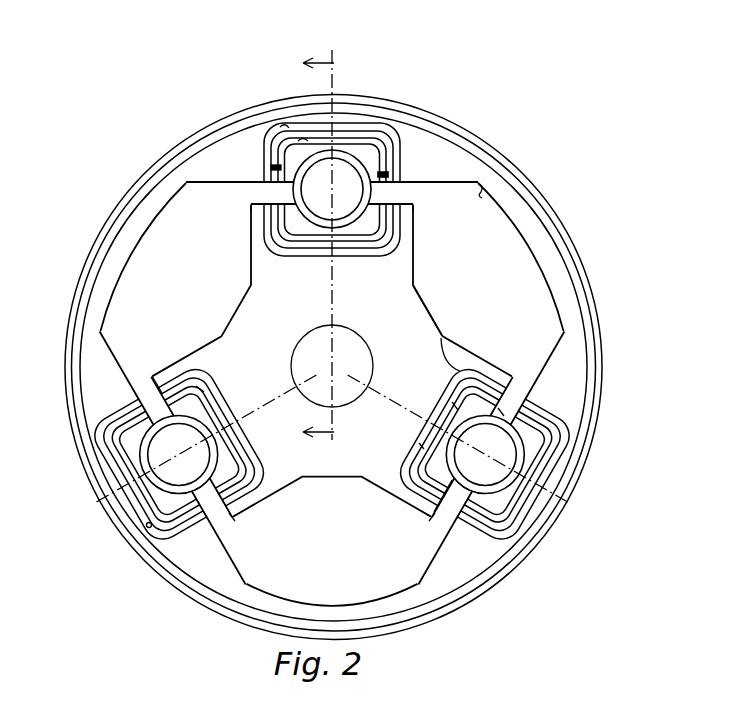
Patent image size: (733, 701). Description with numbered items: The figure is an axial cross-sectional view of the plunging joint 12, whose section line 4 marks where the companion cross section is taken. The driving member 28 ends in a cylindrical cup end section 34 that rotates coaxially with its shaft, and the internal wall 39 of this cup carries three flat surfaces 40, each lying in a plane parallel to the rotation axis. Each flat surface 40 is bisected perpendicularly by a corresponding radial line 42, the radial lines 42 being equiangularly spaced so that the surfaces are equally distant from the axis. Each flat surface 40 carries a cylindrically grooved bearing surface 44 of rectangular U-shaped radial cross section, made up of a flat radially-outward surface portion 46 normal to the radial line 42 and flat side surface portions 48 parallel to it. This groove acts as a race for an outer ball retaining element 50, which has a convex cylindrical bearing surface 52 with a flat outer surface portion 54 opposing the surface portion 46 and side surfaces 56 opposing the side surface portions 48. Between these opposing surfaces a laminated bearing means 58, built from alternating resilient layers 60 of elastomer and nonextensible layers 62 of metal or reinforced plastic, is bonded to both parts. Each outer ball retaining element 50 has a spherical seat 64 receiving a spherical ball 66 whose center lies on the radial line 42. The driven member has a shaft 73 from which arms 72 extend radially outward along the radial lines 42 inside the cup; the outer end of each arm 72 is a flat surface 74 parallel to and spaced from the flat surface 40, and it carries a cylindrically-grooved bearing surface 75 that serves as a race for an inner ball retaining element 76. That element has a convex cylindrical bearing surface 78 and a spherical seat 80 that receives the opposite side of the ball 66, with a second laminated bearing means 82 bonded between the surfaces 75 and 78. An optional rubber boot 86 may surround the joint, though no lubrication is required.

The section line 4- 4 is at (326, 239).
The plunging joint 12 is at (338, 367).
The driving member 28 is at (558, 242).
The cylindrical cup end section 34 is at (504, 194).
The internal wall 39 is at (483, 184).
The flat surface 40 is at (429, 186).
The radial line 42 is at (334, 80).
The cylindrically grooved bearing surface 44 is at (392, 123).
The radially-outward surface portion 46 is at (285, 127).
The side surface portion 48 is at (264, 152).
The outer ball retaining element 50 is at (371, 160).
The cylindrical bearing surface 52 is at (273, 169).
The flat outer surface portion 54 is at (278, 176).
The side surface 56 is at (382, 178).
The laminated bearing means 58 is at (177, 538).
The resilient layer 60 is at (124, 425).
The nonextensible layer 62 is at (157, 532).
The spherical seat 64 is at (188, 437).
The spherical ball 66 is at (200, 392).
The arm 72 is at (414, 278).
The shaft 73 is at (355, 338).
The flat surface 74 is at (413, 203).
The cylindrically-grooved bearing surface 75 is at (421, 446).
The inner ball retaining element 76 is at (455, 406).
The convex cylindrical bearing surface 78 is at (441, 339).
The spherical seat 80 is at (433, 497).
The second laminated bearing means 82 is at (476, 365).
The rubber boot 86 is at (548, 208).